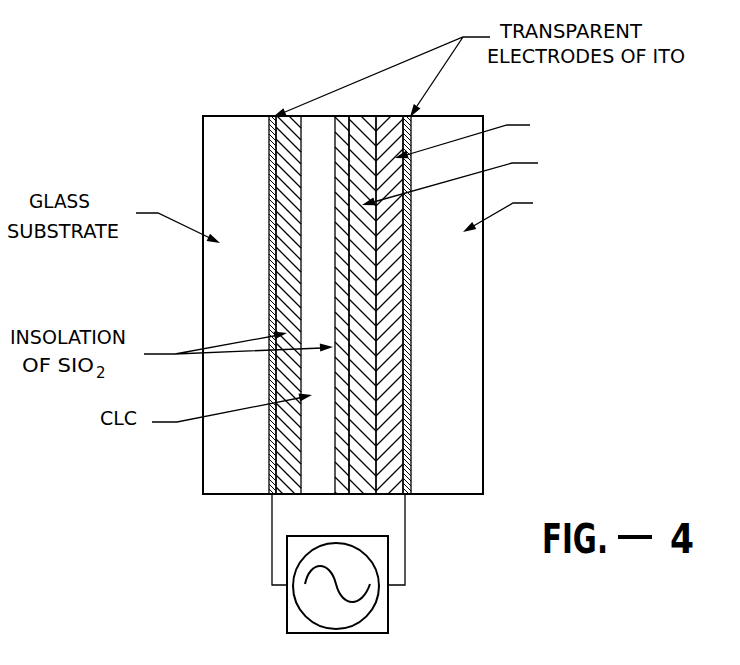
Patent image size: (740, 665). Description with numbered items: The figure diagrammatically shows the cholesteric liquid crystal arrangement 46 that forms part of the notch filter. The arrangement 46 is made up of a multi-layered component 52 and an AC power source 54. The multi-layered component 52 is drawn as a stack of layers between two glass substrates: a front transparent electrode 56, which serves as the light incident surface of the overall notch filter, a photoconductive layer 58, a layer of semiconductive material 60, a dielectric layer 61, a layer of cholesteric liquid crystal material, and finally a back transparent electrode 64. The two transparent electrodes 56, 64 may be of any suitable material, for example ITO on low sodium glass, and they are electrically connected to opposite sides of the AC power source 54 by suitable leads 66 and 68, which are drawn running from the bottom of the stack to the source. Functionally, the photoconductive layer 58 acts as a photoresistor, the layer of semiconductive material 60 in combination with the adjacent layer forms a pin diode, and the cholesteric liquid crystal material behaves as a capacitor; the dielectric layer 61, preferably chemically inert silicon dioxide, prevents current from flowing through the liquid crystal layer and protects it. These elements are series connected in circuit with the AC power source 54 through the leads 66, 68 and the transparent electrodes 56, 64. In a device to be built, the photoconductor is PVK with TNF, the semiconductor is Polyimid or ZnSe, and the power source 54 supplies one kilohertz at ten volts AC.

The cholesteric liquid crystal arrangement 46 is at (125, 100).
The multi-layered component 52 is at (552, 428).
The AC power source 54 is at (388, 613).
The front transparent electrode 56 is at (411, 357).
The photoconductive layer 58 is at (388, 297).
The layer of semiconductive material 60 is at (376, 413).
The dielectric layer 61 is at (288, 291).
The back transparent electrode 64 is at (268, 448).
The lead 66 is at (407, 527).
The lead 68 is at (282, 518).